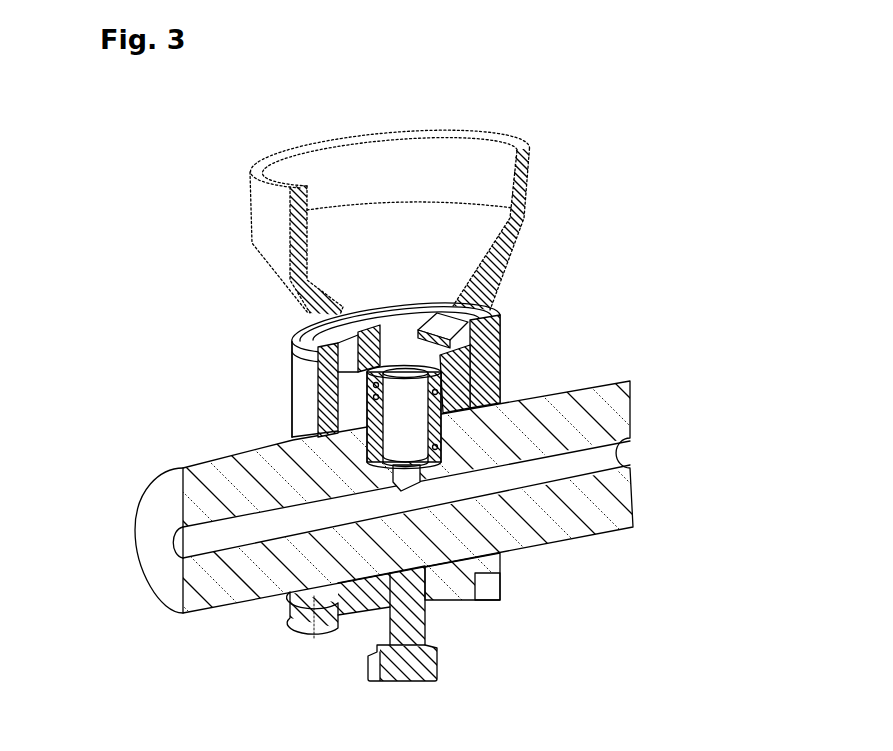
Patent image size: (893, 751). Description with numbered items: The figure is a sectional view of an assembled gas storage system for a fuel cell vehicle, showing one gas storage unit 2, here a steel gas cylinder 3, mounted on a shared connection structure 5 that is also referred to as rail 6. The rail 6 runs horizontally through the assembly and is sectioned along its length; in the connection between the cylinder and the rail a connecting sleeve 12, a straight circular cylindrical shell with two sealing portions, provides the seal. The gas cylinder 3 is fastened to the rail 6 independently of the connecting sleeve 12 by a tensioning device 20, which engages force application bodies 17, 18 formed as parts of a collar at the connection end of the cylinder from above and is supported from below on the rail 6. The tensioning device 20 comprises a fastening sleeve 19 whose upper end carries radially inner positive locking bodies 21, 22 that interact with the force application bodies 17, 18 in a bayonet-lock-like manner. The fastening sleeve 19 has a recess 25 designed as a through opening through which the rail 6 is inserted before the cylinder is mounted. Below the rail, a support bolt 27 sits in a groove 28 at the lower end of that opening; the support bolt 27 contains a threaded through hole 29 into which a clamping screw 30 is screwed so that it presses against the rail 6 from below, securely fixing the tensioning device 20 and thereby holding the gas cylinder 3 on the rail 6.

The gas storage unit 2 is at (548, 151).
The gas cylinder 3 is at (528, 200).
The shared connection structure 5 is at (640, 390).
The rail 6 is at (207, 594).
The connecting sleeve 12 is at (447, 398).
The force application body 17 is at (345, 384).
The force application body 18 is at (500, 343).
The fastening sleeve 19 is at (303, 397).
The tensioning device 20 is at (394, 637).
The positive locking body 21 is at (292, 345).
The positive locking body 22 is at (503, 320).
The recess 25 is at (293, 439).
The support bolt 27 is at (448, 605).
The groove 28 is at (290, 627).
The threaded through hole 29 is at (390, 606).
The clamping screw 30 is at (413, 670).